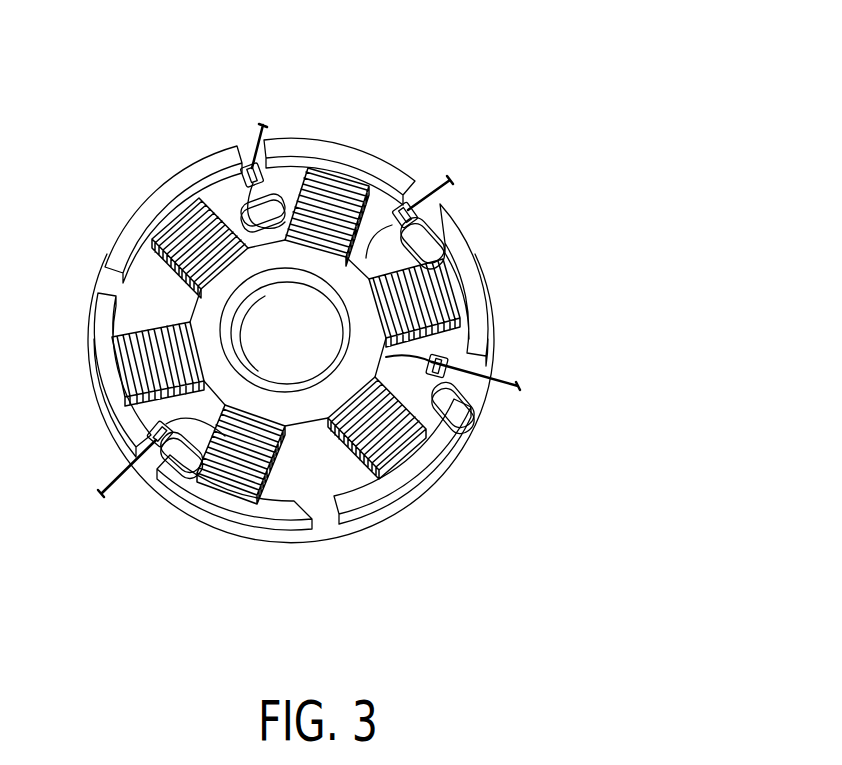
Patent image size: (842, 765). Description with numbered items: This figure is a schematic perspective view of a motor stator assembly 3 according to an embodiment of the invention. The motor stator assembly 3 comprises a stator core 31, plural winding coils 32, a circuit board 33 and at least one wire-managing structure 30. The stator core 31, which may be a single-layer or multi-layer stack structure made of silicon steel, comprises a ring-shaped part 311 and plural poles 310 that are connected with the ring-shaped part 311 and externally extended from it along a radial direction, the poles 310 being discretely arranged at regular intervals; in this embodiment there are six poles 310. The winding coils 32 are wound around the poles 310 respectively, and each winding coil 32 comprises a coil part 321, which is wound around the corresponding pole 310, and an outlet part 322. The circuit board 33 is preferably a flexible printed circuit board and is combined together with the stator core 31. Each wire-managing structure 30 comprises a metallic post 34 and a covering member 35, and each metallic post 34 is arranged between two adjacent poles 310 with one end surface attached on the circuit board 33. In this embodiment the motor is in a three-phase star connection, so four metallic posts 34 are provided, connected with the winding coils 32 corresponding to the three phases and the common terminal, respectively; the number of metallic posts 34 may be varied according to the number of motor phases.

The motor stator assembly 3 is at (449, 323).
The wire-managing structure 30 is at (147, 520).
The stator core 31 is at (386, 249).
The poles 310 is at (382, 174).
The ring-shaped part 311 is at (267, 255).
The winding coil 32 is at (428, 310).
The coil part 321 is at (418, 405).
The outlet part 322 is at (458, 352).
The circuit board 33 is at (308, 481).
The metallic post 34 is at (152, 440).
The covering member 35 is at (177, 447).